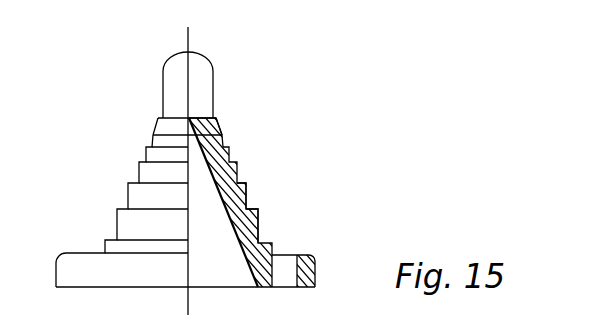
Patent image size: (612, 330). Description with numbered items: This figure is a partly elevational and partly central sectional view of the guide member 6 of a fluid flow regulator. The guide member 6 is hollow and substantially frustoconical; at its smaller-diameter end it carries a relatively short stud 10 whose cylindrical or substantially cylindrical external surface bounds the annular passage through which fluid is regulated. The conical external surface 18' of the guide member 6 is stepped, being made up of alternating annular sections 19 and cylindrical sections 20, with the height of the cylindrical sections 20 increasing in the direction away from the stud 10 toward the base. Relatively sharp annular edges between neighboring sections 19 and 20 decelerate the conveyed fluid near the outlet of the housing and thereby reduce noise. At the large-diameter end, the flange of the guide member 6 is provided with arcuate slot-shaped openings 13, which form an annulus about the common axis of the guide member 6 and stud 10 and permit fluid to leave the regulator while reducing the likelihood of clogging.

The guide member 6 is at (138, 100).
The stud 10 is at (200, 78).
The conical external surface 18' is at (303, 210).
The annular sections 19 is at (253, 204).
The cylindrical sections 20 is at (261, 223).
The openings 13 is at (283, 266).